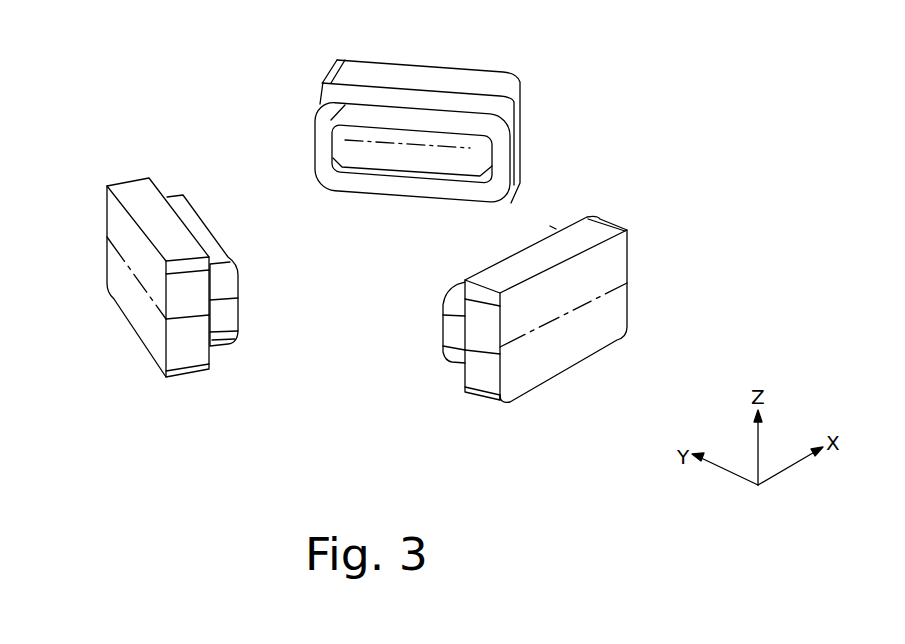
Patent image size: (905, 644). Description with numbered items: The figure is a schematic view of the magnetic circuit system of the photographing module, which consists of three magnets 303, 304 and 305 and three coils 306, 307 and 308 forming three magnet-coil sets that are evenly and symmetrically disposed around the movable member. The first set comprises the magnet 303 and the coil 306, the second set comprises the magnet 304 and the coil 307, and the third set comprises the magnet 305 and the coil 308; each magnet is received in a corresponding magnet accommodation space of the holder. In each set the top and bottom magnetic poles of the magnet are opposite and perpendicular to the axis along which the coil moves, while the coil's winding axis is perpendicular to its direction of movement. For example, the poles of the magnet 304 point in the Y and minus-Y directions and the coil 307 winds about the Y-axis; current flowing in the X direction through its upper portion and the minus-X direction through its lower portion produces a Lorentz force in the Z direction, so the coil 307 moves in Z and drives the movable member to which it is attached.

The magnet 303 is at (155, 213).
The magnet 304 is at (580, 243).
The magnet 305 is at (382, 73).
The coil 306 is at (230, 317).
The coil 307 is at (455, 335).
The coil 308 is at (367, 110).